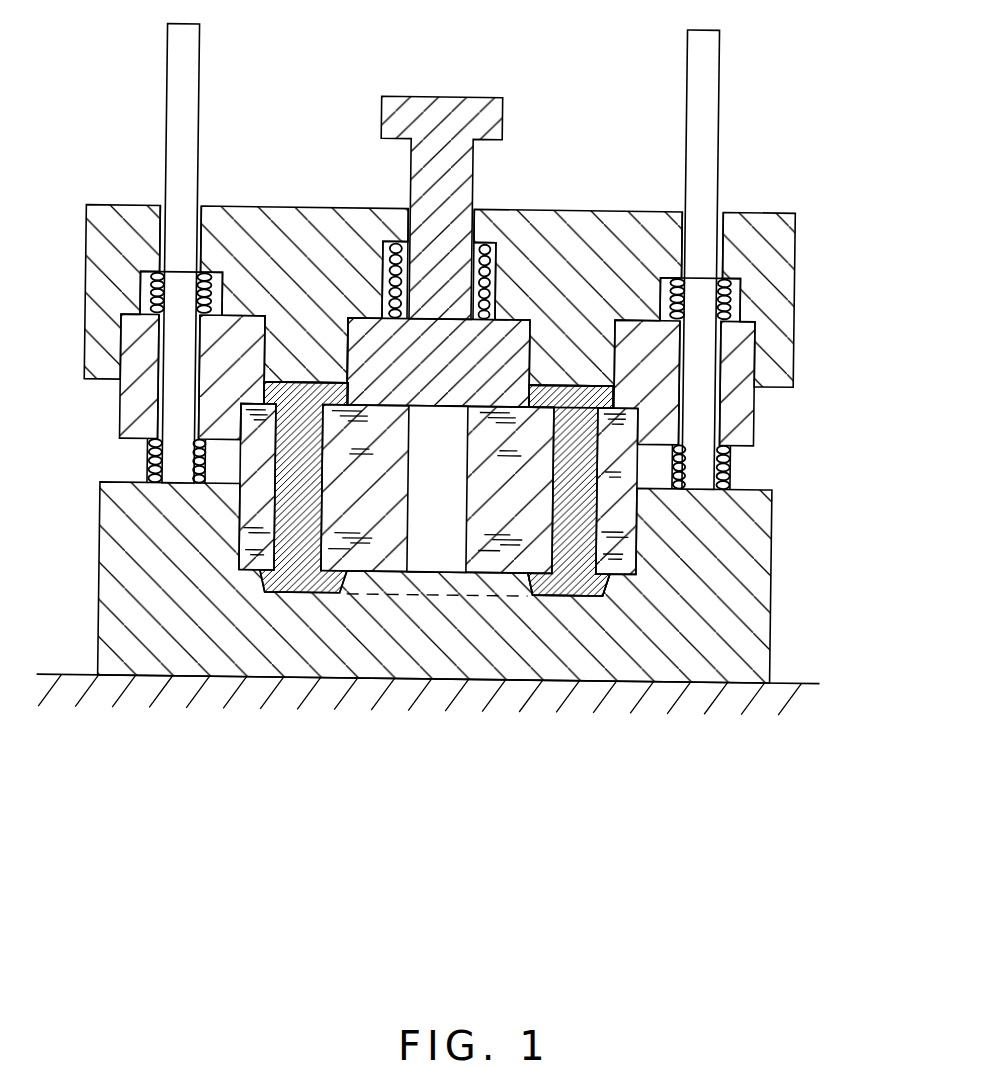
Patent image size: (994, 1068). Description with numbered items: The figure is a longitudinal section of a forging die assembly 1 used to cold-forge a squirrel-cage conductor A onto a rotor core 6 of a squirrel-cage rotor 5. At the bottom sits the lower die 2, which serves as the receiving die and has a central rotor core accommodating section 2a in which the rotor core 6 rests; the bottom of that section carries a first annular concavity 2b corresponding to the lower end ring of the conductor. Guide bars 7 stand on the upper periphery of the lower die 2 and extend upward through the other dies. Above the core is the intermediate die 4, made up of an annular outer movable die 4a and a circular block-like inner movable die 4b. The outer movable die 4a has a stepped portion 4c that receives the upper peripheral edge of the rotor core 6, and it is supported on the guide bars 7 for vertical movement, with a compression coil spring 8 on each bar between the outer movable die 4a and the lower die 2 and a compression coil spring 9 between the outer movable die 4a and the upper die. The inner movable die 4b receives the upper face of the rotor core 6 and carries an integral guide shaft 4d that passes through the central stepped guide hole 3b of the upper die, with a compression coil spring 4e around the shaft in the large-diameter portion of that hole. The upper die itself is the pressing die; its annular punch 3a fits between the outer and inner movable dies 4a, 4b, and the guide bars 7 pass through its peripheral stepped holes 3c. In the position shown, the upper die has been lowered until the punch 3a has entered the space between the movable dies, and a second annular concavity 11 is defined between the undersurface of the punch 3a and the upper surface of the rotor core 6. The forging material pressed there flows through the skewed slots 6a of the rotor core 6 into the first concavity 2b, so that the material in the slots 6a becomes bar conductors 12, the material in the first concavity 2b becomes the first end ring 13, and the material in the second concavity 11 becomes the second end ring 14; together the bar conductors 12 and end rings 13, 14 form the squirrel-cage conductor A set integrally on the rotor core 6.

The forging die assembly 1 is at (90, 512).
The lower die 2 is at (98, 615).
The rotor core accommodating section 2a is at (242, 551).
The first annular concavity 2b is at (573, 590).
The punch 3a is at (608, 353).
The central stepped guide hole 3b is at (412, 215).
The peripheral stepped holes 3c is at (164, 225).
The intermediate die 4 is at (756, 417).
The outer movable die 4a is at (121, 359).
The inner movable die 4b is at (347, 342).
The stepped portion 4c is at (243, 410).
The guide shaft 4d is at (473, 178).
The compression coil spring 4e is at (383, 263).
The squirrel-cage rotor 5 is at (505, 584).
The rotor core 6 is at (386, 552).
The skewed slots 6a is at (297, 572).
The guide bars 7 is at (175, 52).
The compression coil spring 8 is at (153, 470).
The compression coil spring 9 is at (160, 293).
The second annular concavity 11 is at (600, 422).
The bar conductors 12 is at (596, 520).
The first end ring 13 is at (570, 590).
The second end ring 14 is at (563, 398).
The squirrel-cage conductor A is at (547, 605).